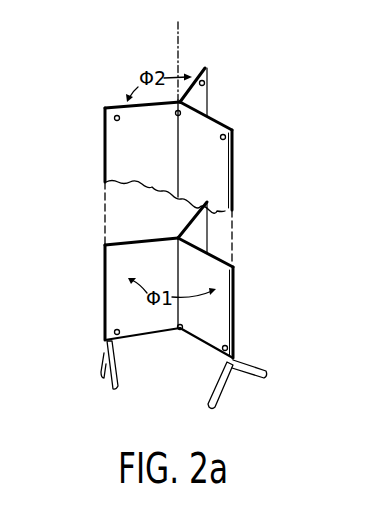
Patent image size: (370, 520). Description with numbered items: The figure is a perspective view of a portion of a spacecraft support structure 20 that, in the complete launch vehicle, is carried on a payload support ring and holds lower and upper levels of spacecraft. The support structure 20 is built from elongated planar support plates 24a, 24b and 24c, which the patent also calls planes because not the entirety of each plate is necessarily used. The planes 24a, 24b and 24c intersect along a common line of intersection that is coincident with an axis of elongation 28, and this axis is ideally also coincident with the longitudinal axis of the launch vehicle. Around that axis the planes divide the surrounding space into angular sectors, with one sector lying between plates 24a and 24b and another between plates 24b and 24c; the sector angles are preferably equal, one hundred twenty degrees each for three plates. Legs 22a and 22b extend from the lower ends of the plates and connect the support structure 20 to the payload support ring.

The spacecraft support structure 20 is at (162, 250).
The leg 22a is at (253, 378).
The leg 22b is at (107, 388).
The support plate 24a is at (214, 171).
The support plate 24b is at (122, 140).
The support plate 24c is at (202, 93).
The axis of elongation 28 is at (180, 31).